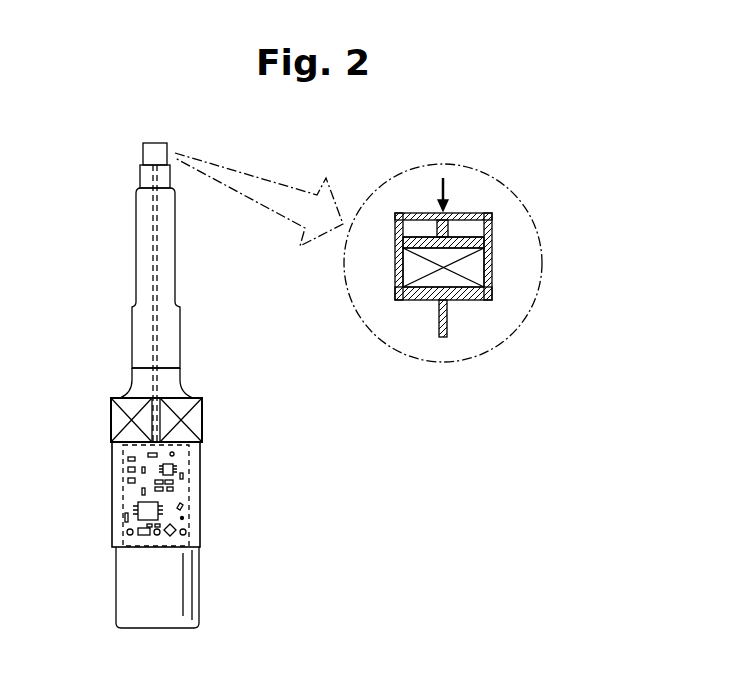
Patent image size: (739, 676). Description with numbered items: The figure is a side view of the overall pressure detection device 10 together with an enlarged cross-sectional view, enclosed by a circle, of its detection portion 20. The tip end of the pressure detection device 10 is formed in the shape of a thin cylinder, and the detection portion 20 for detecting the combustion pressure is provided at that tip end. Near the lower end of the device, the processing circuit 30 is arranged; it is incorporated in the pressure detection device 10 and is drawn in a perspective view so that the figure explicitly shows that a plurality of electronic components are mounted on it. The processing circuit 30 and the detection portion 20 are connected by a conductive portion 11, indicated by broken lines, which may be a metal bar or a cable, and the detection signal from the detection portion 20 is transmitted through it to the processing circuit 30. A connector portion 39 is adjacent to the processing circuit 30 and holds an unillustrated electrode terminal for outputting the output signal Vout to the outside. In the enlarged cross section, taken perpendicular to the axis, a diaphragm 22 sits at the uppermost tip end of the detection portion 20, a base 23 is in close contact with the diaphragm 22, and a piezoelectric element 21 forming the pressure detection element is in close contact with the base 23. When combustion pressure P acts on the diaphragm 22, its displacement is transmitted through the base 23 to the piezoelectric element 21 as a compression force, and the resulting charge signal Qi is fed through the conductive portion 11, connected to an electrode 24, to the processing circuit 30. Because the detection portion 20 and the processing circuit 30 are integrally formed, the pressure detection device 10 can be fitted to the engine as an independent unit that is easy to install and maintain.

The pressure detection device 10 is at (176, 396).
The conductive portion 11 is at (152, 277).
The detection portion 20 is at (143, 153).
The piezoelectric element 21 is at (492, 268).
The diaphragm 22 is at (465, 213).
The base 23 is at (484, 242).
The electrode 24 is at (467, 300).
The processing circuit 30 is at (190, 503).
The connector portion 39 is at (198, 585).